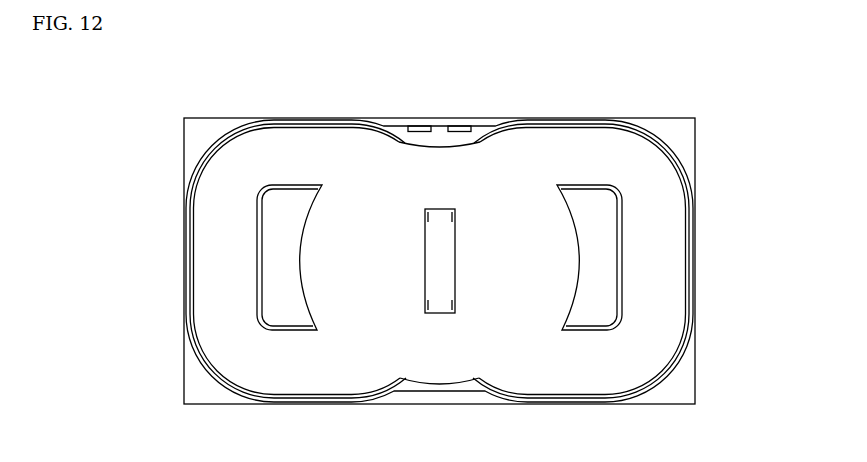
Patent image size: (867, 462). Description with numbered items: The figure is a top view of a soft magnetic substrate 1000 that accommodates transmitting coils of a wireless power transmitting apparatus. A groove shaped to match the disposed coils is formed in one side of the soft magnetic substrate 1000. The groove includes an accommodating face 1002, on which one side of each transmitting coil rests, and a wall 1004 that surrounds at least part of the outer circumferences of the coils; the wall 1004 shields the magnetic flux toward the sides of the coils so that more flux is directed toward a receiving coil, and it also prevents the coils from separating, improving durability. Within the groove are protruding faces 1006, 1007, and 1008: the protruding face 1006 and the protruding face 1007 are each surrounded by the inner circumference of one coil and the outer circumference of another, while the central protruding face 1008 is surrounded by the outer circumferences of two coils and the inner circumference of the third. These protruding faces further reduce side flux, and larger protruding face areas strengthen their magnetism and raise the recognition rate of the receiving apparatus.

The soft magnetic substrate 1000 is at (682, 133).
The accommodating face 1002 is at (637, 347).
The wall 1004 is at (577, 118).
The protruding face 1006 is at (282, 283).
The protruding face 1007 is at (598, 273).
The protruding face 1008 is at (450, 198).